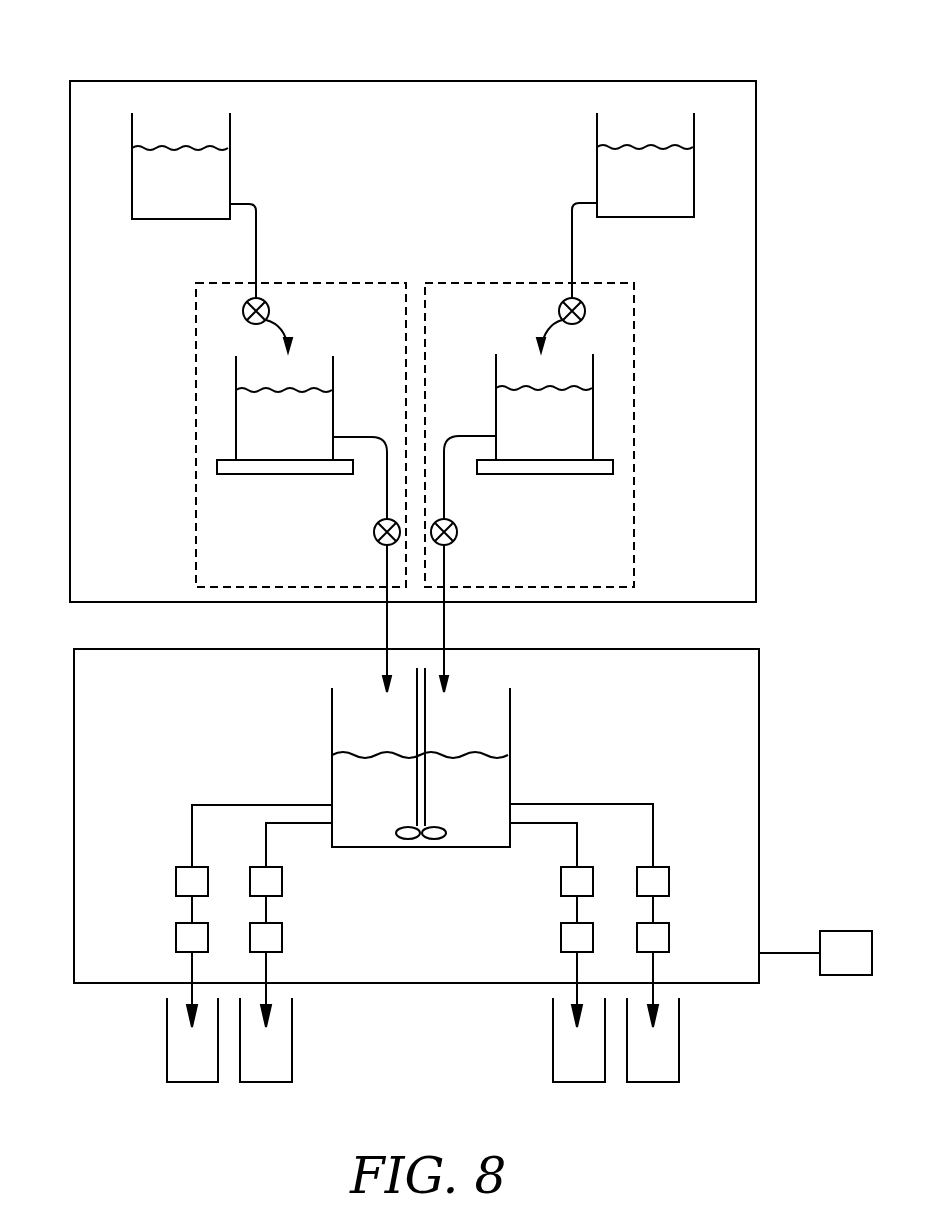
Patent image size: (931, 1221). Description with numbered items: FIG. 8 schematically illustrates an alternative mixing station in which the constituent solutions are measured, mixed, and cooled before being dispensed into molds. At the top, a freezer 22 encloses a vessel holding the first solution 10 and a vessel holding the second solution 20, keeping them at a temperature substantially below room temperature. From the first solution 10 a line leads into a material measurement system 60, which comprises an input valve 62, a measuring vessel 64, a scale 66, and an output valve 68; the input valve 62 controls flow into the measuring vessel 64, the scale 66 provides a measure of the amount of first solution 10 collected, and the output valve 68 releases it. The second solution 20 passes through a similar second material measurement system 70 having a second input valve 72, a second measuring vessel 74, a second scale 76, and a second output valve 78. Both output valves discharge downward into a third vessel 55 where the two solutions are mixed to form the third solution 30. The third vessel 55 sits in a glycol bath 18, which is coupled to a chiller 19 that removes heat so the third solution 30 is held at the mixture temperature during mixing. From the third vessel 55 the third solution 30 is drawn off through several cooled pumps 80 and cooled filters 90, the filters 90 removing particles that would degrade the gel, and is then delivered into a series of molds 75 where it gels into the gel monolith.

The freezer 22 is at (665, 81).
The glycol bath 18 is at (758, 697).
The first solution 10 is at (143, 183).
The second solution 20 is at (683, 178).
The material measurement system 60 is at (195, 410).
The second material measurement system 70 is at (634, 407).
The input valve 62 is at (243, 312).
The second input valve 72 is at (585, 311).
The measuring vessel 64 is at (236, 365).
The second measuring vessel 74 is at (593, 367).
The scale 66 is at (217, 467).
The second scale 76 is at (613, 467).
The output valve 68 is at (374, 532).
The second output valve 78 is at (457, 532).
The third vessel 55 is at (510, 722).
The third solution 30 is at (345, 777).
The pumps 80 is at (188, 865).
The filters 90 is at (176, 935).
The molds 75 is at (167, 1038).
The chiller 19 is at (835, 930).